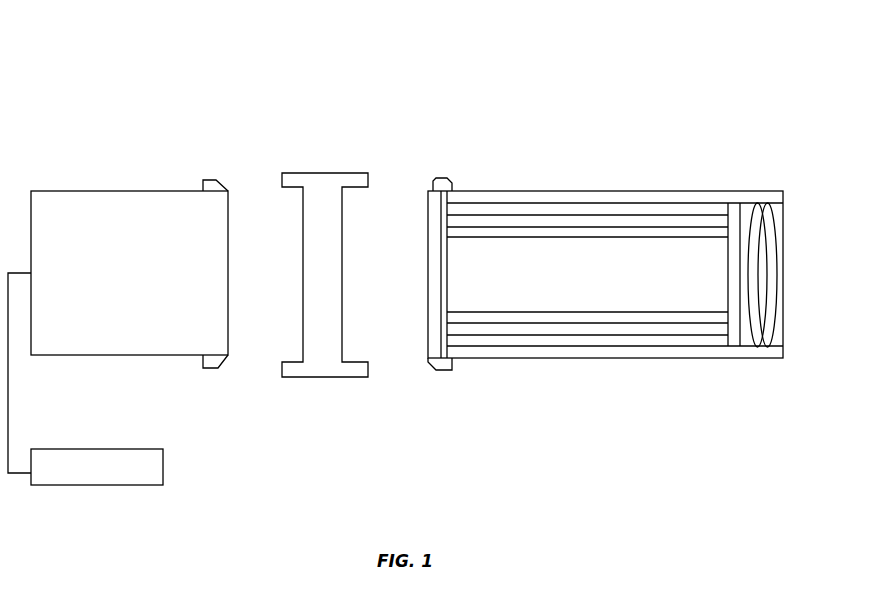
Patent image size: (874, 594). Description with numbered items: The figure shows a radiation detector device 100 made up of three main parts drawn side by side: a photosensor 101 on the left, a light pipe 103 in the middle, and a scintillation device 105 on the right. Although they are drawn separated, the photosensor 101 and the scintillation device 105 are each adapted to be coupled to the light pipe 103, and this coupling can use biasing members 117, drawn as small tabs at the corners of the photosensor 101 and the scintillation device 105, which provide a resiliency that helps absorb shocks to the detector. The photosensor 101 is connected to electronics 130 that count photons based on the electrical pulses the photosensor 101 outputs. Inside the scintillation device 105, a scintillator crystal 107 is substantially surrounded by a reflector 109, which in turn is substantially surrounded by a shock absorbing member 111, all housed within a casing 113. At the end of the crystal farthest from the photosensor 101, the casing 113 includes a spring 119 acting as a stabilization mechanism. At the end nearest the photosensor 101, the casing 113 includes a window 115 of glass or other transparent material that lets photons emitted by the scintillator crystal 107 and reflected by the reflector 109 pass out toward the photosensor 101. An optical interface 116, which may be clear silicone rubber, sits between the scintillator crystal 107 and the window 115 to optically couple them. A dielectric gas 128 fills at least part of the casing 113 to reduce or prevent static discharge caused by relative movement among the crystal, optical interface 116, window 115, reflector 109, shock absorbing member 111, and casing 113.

The radiation detector device 100 is at (100, 103).
The photosensor 101 is at (129, 273).
The light pipe 103 is at (330, 377).
The scintillation device 105 is at (607, 288).
The scintillator crystal 107 is at (585, 280).
The reflector 109 is at (650, 222).
The shock absorbing member 111 is at (578, 210).
The casing 113 is at (518, 190).
The window 115 is at (428, 238).
The optical interface 116 is at (445, 297).
The biasing members 117 is at (208, 180).
The spring 119 is at (762, 220).
The dielectric gas 128 is at (680, 313).
The electronics 130 is at (78, 449).